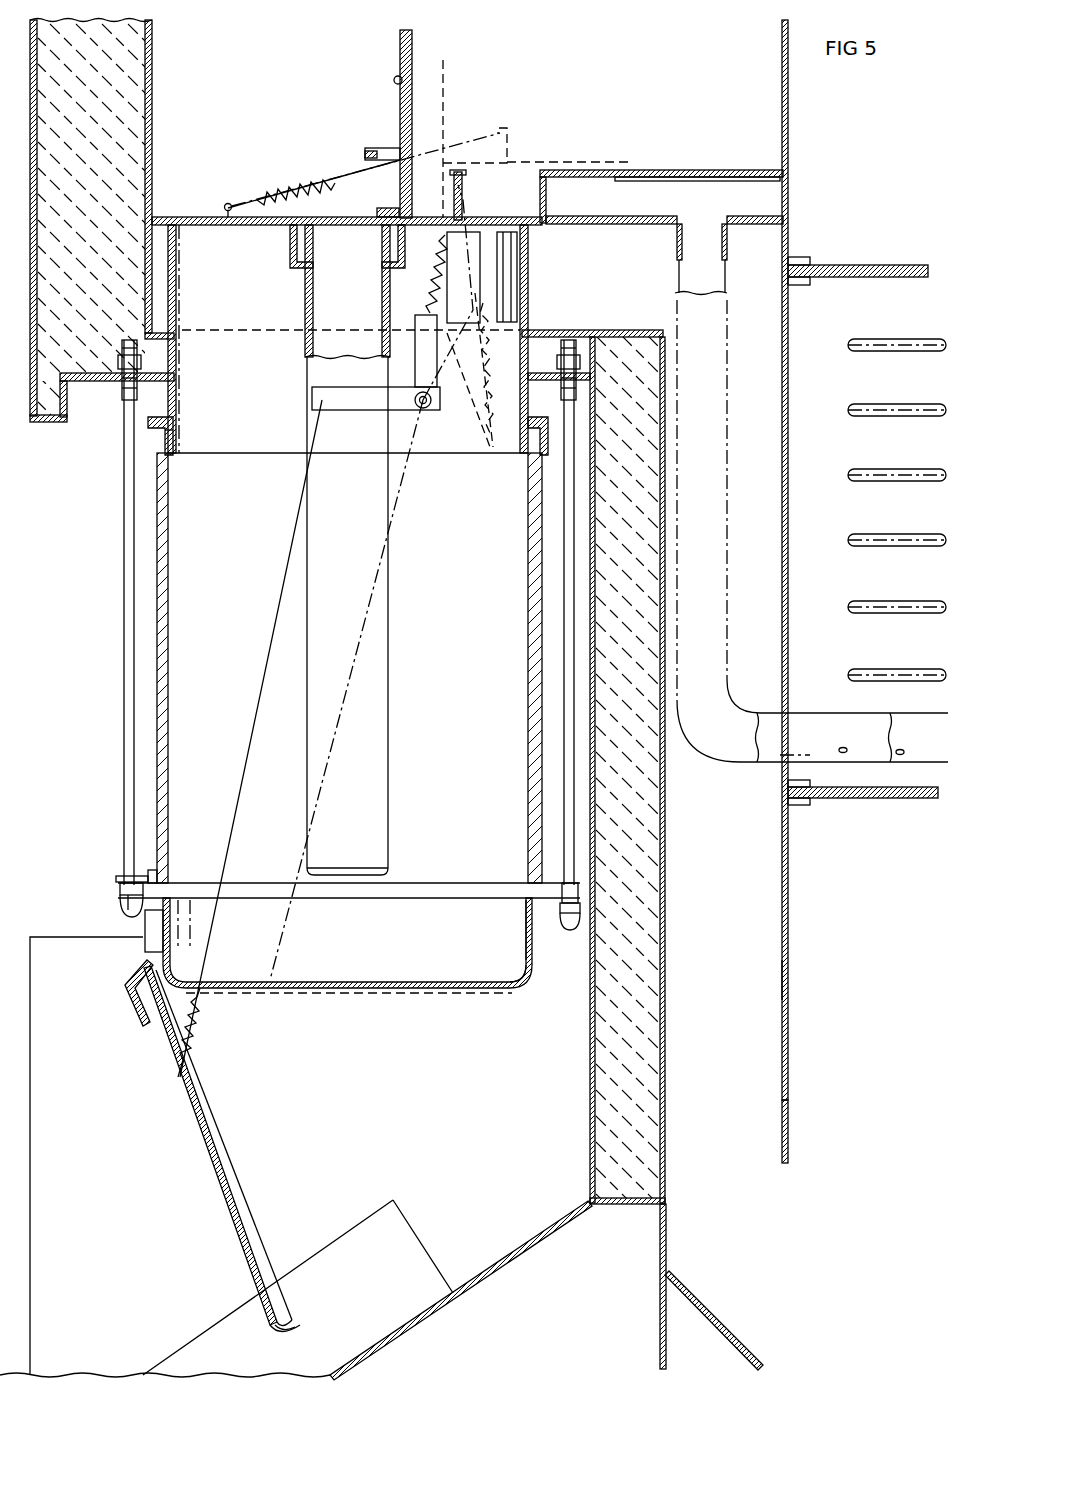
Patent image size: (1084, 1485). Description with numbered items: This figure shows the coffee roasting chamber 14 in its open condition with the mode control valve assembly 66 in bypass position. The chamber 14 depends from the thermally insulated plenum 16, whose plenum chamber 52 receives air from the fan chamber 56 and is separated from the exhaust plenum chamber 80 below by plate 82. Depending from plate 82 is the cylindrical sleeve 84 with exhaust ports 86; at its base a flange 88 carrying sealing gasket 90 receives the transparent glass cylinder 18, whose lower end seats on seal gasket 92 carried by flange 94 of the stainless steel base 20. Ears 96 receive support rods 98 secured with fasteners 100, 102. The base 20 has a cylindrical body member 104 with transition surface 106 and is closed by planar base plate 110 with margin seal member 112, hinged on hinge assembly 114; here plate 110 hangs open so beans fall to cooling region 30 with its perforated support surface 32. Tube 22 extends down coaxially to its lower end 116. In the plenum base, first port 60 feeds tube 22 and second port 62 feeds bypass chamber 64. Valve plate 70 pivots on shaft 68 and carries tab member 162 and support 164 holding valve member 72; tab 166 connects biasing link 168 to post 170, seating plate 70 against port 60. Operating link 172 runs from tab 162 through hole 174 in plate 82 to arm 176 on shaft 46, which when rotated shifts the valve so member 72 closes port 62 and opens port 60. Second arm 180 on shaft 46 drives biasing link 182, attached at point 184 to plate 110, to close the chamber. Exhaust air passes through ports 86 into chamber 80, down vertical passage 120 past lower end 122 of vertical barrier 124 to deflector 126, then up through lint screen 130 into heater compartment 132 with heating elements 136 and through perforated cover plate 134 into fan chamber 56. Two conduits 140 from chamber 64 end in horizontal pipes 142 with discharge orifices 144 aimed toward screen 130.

The coffee roasting chamber 14 is at (150, 668).
The thermally insulated plenum 16 is at (62, 420).
The transparent glass cylinder 18 is at (157, 597).
The stainless steel base 20 is at (518, 996).
The tube 22 is at (392, 730).
The cooling region 30 is at (60, 937).
The perforated support surface 32 is at (458, 1290).
The shaft 46 is at (425, 408).
The plenum chamber 52 is at (210, 73).
The fan chamber 56 is at (855, 560).
The first port 60 is at (320, 228).
The second port 62 is at (612, 182).
The bypass chamber 64 is at (661, 197).
The valve assembly 66 is at (392, 139).
The shaft 68 is at (448, 222).
The valve member 70 is at (372, 224).
The valve member 72 is at (510, 114).
The exhaust plenum chamber 80 is at (411, 300).
The plate 82 is at (182, 217).
The cylindrical stainless steel sleeve 84 is at (176, 260).
The exhaust ports 86 is at (500, 272).
The flange 88 is at (150, 424).
The sealing gasket 90 is at (158, 432).
The seal gasket 92 is at (120, 902).
The flange 94 is at (148, 876).
The ears 96 is at (116, 877).
The support rods 98 is at (130, 538).
The fasteners 100 is at (120, 365).
The fasteners 102 is at (145, 920).
The cylindrical body member 104 is at (526, 935).
The transition surface 106 is at (520, 975).
The planar base plate 110 is at (205, 1146).
The margin seal member 112 is at (282, 1332).
The hinge assembly 114 is at (128, 980).
The lower end 116 is at (390, 872).
The vertical passage 120 is at (634, 849).
The lower end 122 is at (790, 1168).
The vertical barrier 124 is at (790, 985).
The deflector 126 is at (740, 1320).
The lint screen 130 is at (875, 800).
The heater compartment 132 is at (831, 519).
The perforated cover plate 134 is at (905, 265).
The heating elements 136 is at (897, 510).
The conduits 140 is at (732, 455).
The horizontally disposed pipe 142 is at (805, 720).
The discharge orifices 144 is at (925, 755).
The tab member 162 is at (454, 176).
The support 164 is at (402, 55).
The tab 166 is at (376, 148).
The biasing link 168 is at (330, 180).
The post 170 is at (228, 203).
The operating link 172 is at (462, 200).
The hole 174 is at (468, 225).
The arm 176 is at (425, 330).
The second arm 180 is at (325, 393).
The biasing link 182 is at (290, 545).
The point 184 is at (182, 1077).